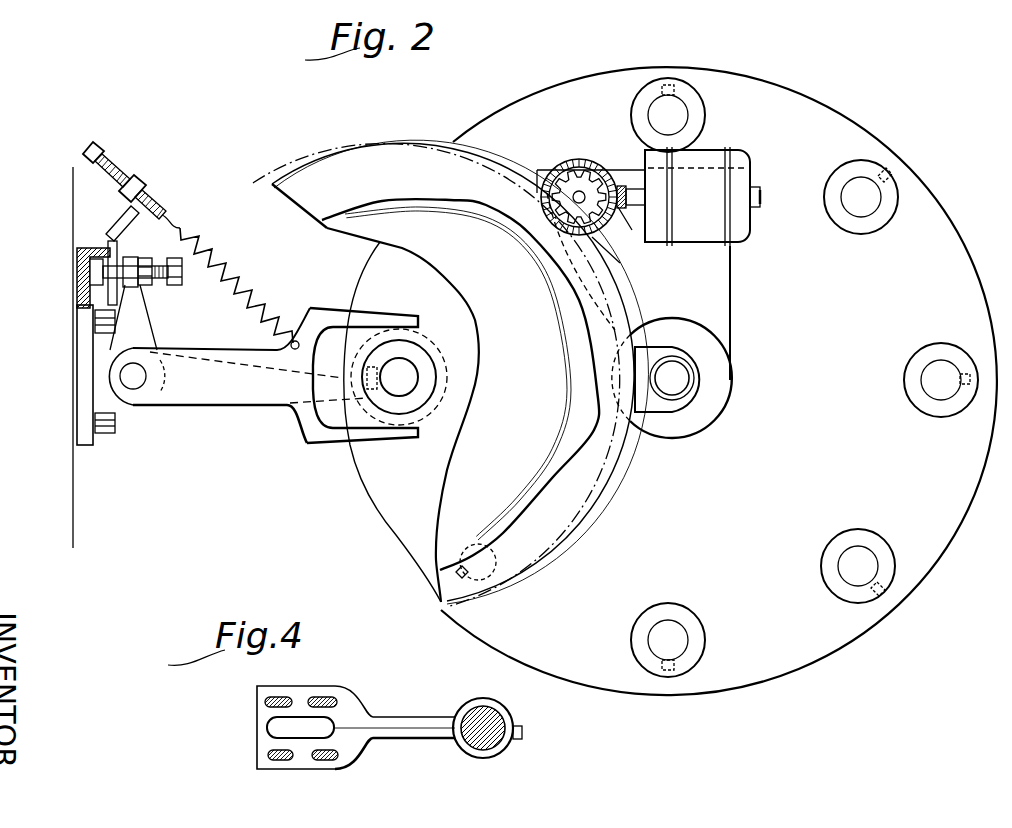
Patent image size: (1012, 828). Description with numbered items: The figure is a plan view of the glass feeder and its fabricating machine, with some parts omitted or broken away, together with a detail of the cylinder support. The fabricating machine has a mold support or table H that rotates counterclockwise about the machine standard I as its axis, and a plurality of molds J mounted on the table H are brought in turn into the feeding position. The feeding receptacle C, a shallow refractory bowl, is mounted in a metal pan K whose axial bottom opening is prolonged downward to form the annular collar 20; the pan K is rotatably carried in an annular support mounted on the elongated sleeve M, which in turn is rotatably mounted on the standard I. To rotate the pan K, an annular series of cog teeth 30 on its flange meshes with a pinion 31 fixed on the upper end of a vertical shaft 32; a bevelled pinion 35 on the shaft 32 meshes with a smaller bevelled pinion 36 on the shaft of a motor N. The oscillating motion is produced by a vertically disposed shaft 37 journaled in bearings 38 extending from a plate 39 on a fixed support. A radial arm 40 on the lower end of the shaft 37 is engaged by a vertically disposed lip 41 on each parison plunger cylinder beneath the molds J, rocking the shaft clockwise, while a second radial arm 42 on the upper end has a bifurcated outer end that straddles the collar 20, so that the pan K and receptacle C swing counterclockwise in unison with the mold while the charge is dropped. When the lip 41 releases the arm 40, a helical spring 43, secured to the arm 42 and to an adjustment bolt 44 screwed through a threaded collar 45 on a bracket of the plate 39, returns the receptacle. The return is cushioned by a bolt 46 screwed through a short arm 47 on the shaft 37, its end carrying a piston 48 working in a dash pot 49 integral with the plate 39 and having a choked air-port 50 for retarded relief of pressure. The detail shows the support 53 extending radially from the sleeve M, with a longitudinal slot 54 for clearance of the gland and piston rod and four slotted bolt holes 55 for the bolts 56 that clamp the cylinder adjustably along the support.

In FIG. 2, the annular collar 20 is at (448, 373).
In FIG. 2, the annular series of cog teeth 30 is at (627, 274).
In FIG. 2, the pinion 31 is at (582, 178).
In FIG. 2, the shaft 32 is at (575, 188).
In FIG. 2, the bevelled pinion 35 is at (605, 170).
In FIG. 2, the smaller bevelled pinion 36 is at (633, 275).
In FIG. 2, the vertically disposed shaft 37 is at (147, 378).
In FIG. 2, the bearings 38 is at (95, 372).
In FIG. 2, the plate 39 is at (77, 352).
In FIG. 2, the radial arm 40 is at (333, 400).
In FIG. 2, the lip 41 is at (352, 338).
In FIG. 2, the second radial arm 42 is at (238, 375).
In FIG. 2, the helical spring 43 is at (239, 288).
In FIG. 2, the adjustment bolt 44 is at (127, 167).
In FIG. 2, the threaded collar 45 is at (168, 196).
In FIG. 2, the bolt 46 is at (115, 238).
In FIG. 2, the short arm 47 is at (146, 338).
In FIG. 2, the piston 48 is at (77, 265).
In FIG. 2, the dash pot 49 is at (75, 283).
In FIG. 2, the choked air-port 50 is at (75, 256).
In FIG. 4, the support 53 is at (400, 722).
In FIG. 4, the longitudinal slot 54 is at (278, 725).
In FIG. 4, the bolt holes 55 is at (322, 762).
In FIG. 4, the bolts 56 is at (324, 692).
In FIG. 2, the feeding receptacle C is at (411, 415).
In FIG. 2, the mold support or table H is at (803, 106).
In FIG. 2, the machine standard I is at (678, 388).
In FIG. 4, the machine standard I is at (512, 733).
In FIG. 2, the molds J is at (703, 113).
In FIG. 2, the metal pan K is at (453, 372).
In FIG. 4, the elongated sleeve M is at (495, 715).
In FIG. 2, the motor N is at (716, 195).